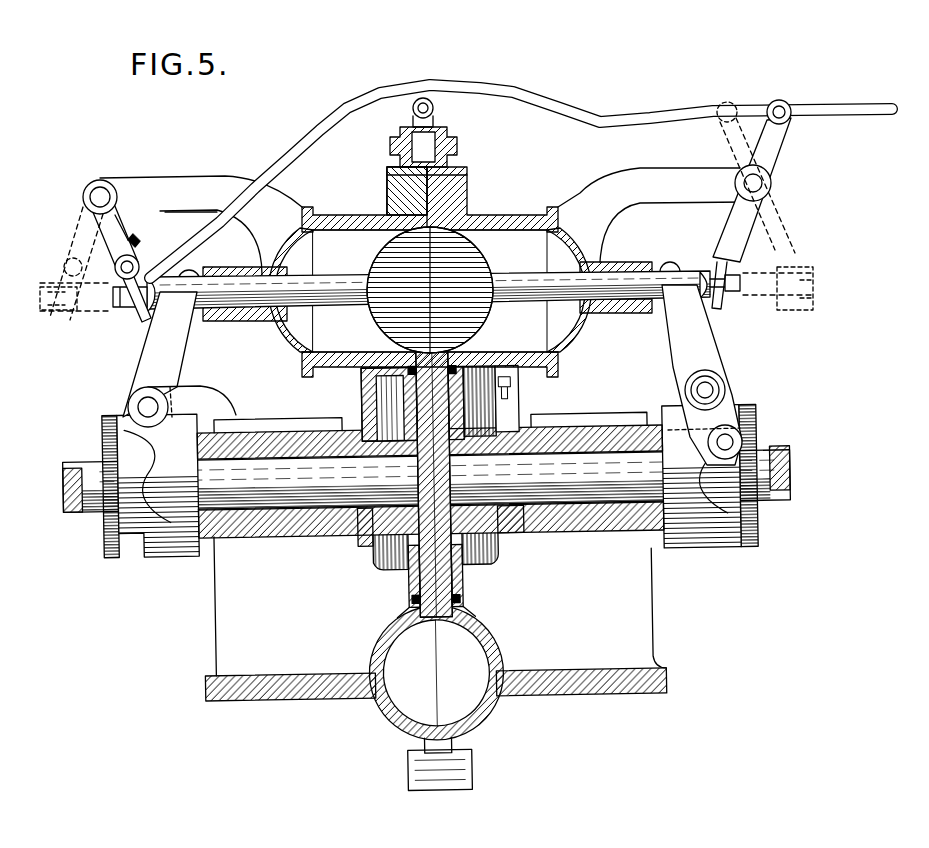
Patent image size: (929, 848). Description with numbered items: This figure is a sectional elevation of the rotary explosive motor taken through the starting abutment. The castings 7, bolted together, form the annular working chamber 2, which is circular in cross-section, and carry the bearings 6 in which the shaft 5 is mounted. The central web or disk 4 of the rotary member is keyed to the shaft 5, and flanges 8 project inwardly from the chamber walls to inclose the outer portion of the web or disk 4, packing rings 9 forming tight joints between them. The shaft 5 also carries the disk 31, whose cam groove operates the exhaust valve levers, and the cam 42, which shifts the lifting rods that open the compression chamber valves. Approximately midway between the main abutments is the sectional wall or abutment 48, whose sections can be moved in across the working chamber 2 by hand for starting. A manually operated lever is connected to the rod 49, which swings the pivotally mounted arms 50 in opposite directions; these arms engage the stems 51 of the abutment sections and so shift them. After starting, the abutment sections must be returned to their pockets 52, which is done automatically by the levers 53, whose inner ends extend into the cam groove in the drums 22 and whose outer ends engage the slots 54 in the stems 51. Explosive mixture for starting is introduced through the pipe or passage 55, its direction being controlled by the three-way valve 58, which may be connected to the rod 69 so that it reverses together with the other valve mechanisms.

The annular working chamber 2 is at (397, 690).
The central web or disk 4 is at (423, 570).
The shaft 5 is at (65, 497).
The bearings 6 is at (240, 530).
The castings 7 is at (637, 603).
The flanges 8 is at (407, 395).
The packing rings 9 is at (413, 368).
The drums 22 is at (110, 437).
The disk 31 is at (520, 540).
The cam 42 is at (360, 540).
The sectional wall or abutment 48 is at (378, 326).
The rod 49 is at (613, 112).
The pivotally mounted arms 50 is at (100, 223).
The stems 51 is at (330, 290).
The pockets 52 is at (340, 232).
The levers 53 is at (152, 345).
The slots 54 is at (225, 267).
The pipe or passage 55 is at (435, 108).
The three-way valve 58 is at (458, 148).
The rod 69 is at (506, 383).